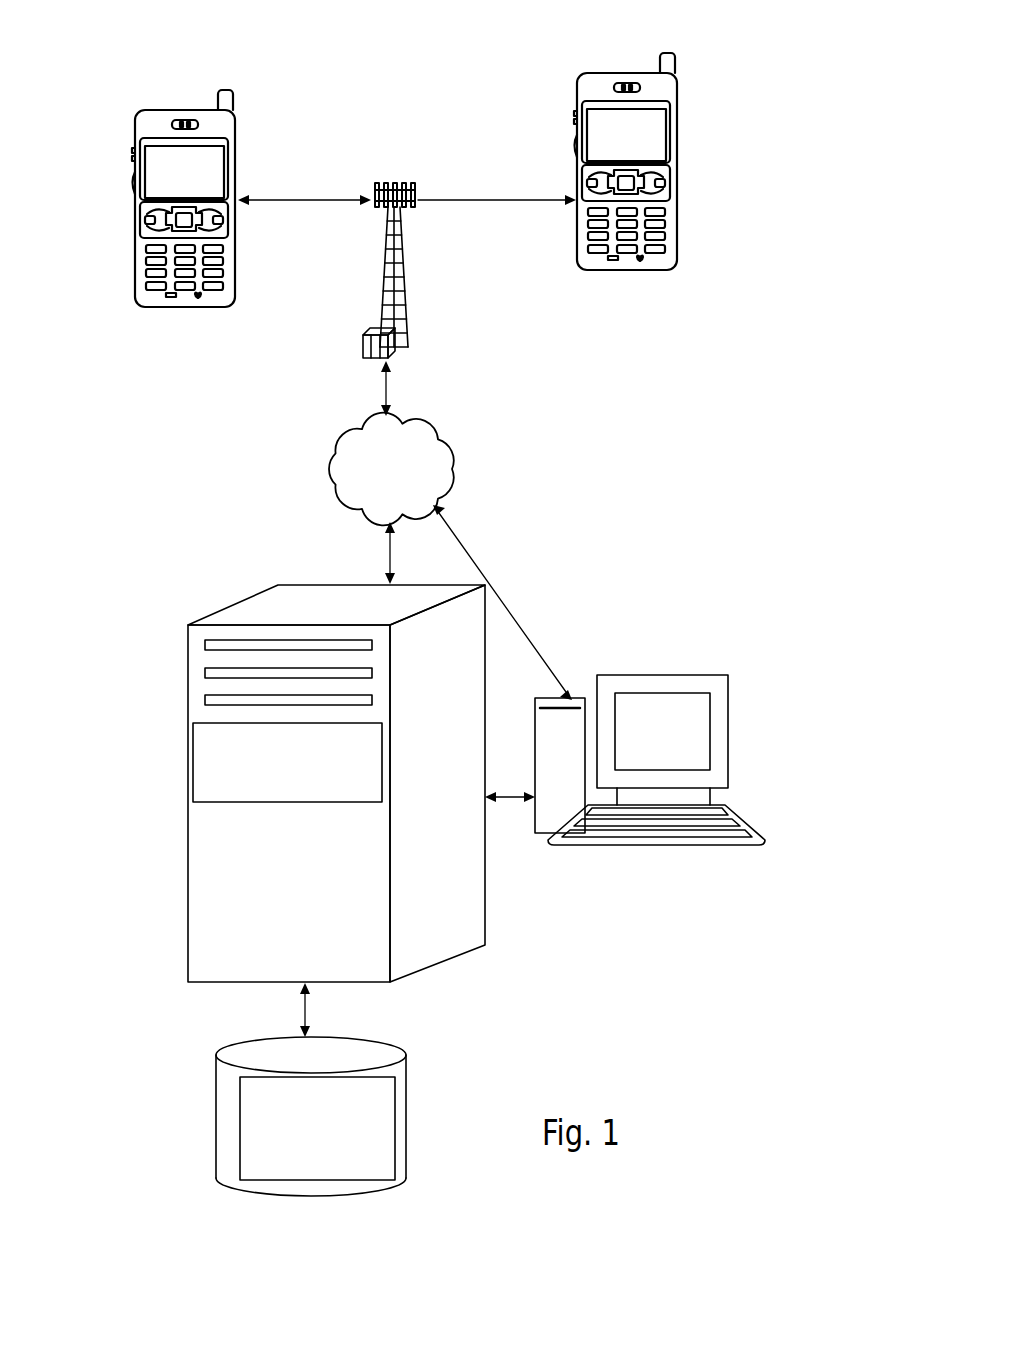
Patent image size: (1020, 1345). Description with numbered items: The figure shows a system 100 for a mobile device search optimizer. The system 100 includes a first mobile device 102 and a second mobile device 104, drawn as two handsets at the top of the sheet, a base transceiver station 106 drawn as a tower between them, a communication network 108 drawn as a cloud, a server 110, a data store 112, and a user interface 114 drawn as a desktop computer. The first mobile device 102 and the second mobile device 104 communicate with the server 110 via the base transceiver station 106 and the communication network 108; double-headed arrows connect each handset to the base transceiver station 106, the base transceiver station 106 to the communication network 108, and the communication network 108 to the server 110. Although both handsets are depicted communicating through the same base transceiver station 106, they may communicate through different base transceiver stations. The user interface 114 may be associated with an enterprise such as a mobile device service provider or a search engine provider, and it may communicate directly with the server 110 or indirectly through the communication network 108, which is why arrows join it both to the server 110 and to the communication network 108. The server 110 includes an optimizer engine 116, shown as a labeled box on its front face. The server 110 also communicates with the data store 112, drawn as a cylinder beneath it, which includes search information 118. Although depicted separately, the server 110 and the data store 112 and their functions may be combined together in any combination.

The system 100 is at (325, 60).
The first mobile device 102 is at (170, 302).
The second mobile device 104 is at (581, 261).
The base transceiver station 106 is at (380, 283).
The communication network 108 is at (362, 515).
The server 110 is at (282, 783).
The data store 112 is at (284, 1121).
The user interface 114 is at (620, 846).
The optimizer engine 116 is at (287, 762).
The search information 118 is at (227, 1176).